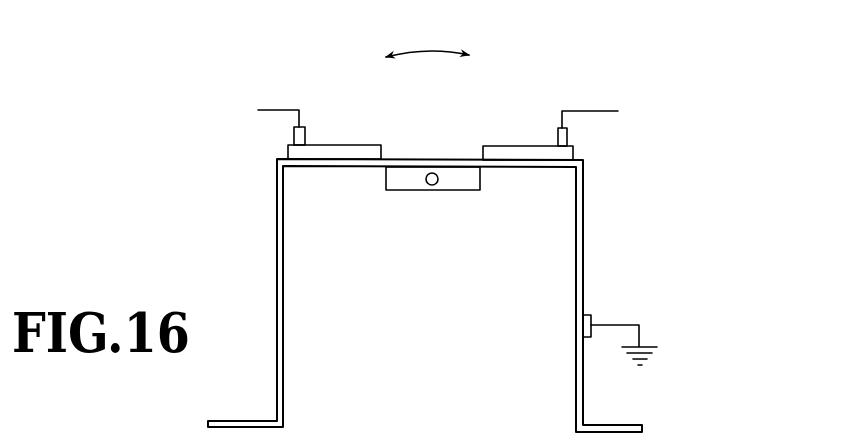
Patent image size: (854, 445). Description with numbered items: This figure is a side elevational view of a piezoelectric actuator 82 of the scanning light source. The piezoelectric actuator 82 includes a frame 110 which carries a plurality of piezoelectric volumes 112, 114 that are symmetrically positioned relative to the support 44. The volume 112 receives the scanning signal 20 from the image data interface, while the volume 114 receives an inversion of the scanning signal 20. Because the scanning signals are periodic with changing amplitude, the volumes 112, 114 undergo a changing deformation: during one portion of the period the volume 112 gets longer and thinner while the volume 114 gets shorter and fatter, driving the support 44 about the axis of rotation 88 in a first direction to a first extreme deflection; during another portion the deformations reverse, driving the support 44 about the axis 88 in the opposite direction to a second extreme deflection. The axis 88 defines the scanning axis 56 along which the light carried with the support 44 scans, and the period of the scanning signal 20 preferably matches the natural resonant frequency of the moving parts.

The frame 110 is at (583, 242).
The piezoelectric volume 112 is at (340, 145).
The piezoelectric volume 114 is at (515, 145).
The scanning signal 20 is at (534, 67).
The support 44 is at (400, 182).
The axis of rotation 88 is at (437, 184).
The piezoelectric actuator 82 is at (219, 150).
The scanning axis 56 is at (432, 52).